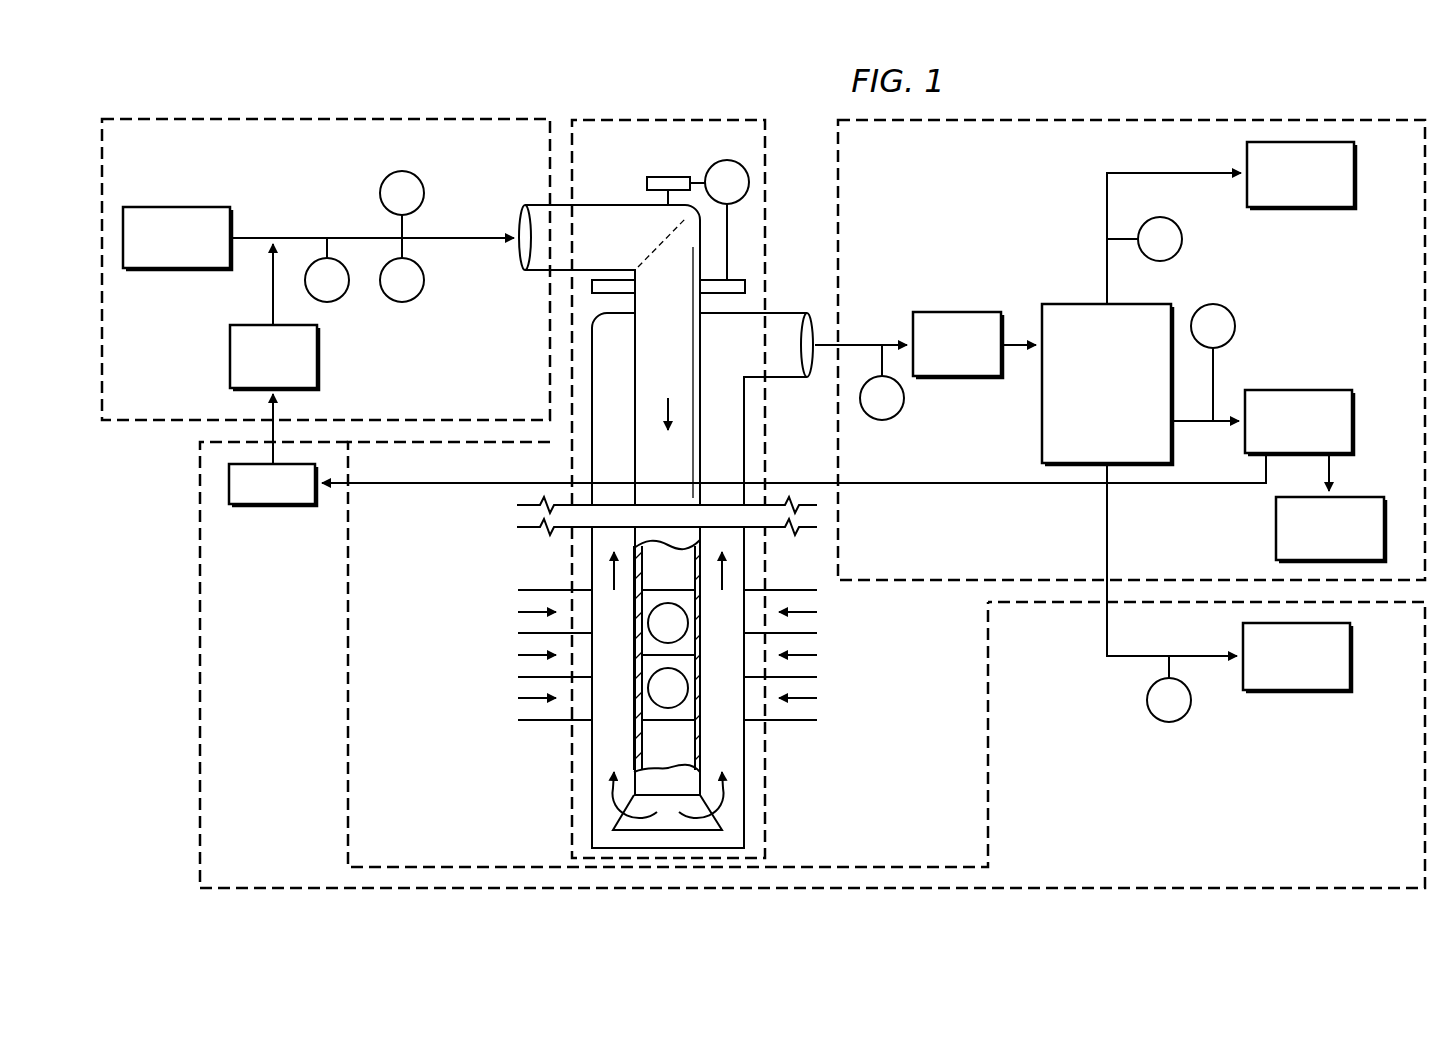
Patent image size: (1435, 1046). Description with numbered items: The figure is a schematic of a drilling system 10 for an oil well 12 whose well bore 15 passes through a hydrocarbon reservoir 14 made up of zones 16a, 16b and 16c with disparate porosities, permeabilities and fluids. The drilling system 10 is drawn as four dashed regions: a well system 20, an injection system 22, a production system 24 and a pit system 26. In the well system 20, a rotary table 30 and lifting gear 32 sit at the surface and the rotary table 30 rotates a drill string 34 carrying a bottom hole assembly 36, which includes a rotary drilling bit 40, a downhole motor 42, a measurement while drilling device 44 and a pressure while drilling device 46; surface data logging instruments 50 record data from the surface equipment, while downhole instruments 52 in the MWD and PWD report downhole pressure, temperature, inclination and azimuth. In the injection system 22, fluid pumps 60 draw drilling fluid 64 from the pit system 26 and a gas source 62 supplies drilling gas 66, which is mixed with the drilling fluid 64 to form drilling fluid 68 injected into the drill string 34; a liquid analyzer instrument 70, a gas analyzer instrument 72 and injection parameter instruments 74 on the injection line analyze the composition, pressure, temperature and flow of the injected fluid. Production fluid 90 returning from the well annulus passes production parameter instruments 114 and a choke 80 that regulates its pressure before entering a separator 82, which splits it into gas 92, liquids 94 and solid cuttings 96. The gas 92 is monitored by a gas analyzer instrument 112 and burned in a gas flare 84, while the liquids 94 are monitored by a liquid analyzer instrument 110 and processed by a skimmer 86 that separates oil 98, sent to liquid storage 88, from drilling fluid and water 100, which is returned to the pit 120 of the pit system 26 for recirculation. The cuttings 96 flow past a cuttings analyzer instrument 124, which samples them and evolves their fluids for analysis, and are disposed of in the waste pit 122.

The drilling system 10 is at (311, 96).
The oil well 12 is at (556, 448).
The hydrocarbon reservoir 14 is at (492, 578).
The well bore 15 is at (746, 440).
The zone 16a is at (516, 628).
The zone 16b is at (516, 672).
The zone 16c is at (516, 715).
The well system 20 is at (702, 116).
The injection system 22 is at (166, 116).
The production system 24 is at (1287, 116).
The pit system 26 is at (1330, 864).
The rotary table 30 is at (748, 287).
The lifting gear 32 is at (646, 183).
The drill string 34 is at (703, 356).
The bottom hole assembly 36 is at (722, 734).
The rotary drilling bit 40 is at (645, 786).
The downhole motor 42 is at (655, 756).
The measurement while drilling device 44 is at (703, 690).
The pressure while drilling device 46 is at (634, 618).
The surface data logging instruments 50 is at (744, 168).
The downhole instruments 52 is at (668, 602).
The fluid pumps 60 is at (229, 358).
The gas source 62 is at (165, 268).
The drilling fluid 64 is at (270, 284).
The drilling gas 66 is at (250, 236).
The drilling fluid 68 is at (468, 244).
The liquid analyzer instrument 70 is at (405, 303).
The gas analyzer instrument 72 is at (330, 303).
The injection parameter instruments 74 is at (425, 190).
The choke 80 is at (958, 377).
The separator 82 is at (1094, 414).
The gas flare 84 is at (1356, 174).
The skimmer 86 is at (1354, 420).
The liquid storage 88 is at (1276, 528).
The production fluid 90 is at (859, 344).
The gas 92 is at (1104, 216).
The liquids 94 is at (1193, 424).
The solid cuttings 96 is at (1104, 630).
The oil 98 is at (1333, 466).
The drilling fluid and water 100 is at (957, 486).
The liquid analyzer instrument 110 is at (1235, 324).
The gas analyzer instrument 112 is at (1182, 242).
The production parameter instruments 114 is at (881, 421).
The pit 120 is at (268, 504).
The waste pit 122 is at (1318, 690).
The cuttings analyzer instrument 124 is at (1164, 722).